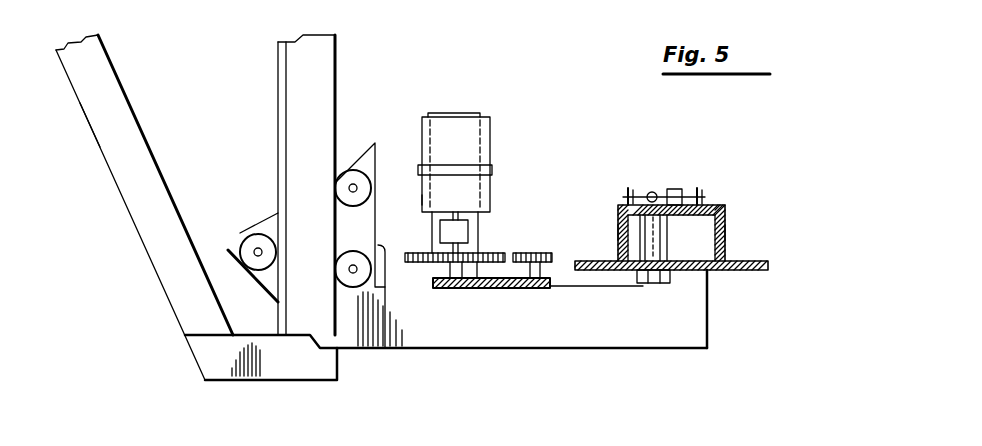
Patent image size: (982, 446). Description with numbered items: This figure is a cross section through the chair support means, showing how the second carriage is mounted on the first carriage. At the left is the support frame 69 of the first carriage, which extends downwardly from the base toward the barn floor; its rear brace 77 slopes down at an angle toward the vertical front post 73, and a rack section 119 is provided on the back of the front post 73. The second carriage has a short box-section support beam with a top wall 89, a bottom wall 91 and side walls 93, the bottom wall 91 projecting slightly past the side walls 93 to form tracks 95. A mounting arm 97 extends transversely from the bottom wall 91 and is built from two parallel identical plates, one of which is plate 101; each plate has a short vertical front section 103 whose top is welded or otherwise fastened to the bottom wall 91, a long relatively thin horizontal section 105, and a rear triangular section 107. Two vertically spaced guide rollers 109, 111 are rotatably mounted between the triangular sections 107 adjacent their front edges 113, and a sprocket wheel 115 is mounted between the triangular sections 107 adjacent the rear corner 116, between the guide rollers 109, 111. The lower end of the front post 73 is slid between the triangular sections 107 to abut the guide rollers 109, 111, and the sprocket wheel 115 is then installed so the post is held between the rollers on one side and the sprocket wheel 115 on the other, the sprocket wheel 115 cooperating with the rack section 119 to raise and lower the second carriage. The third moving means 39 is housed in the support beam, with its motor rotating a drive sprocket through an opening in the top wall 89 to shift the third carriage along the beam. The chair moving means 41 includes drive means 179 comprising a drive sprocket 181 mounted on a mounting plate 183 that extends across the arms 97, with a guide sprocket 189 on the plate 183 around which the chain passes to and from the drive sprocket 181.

The third moving means 39 is at (655, 169).
The chair moving means 41 is at (489, 79).
The support frame 69 is at (120, 194).
The front post 73 is at (337, 67).
The rear brace 77 is at (104, 157).
The top wall 89 is at (708, 207).
The bottom wall 91 is at (702, 257).
The side walls 93 is at (618, 228).
The tracks 95 is at (592, 260).
The mounting arm 97 is at (617, 349).
The plate 101 is at (667, 332).
The front section 103 is at (708, 292).
The horizontal section 105 is at (512, 352).
The triangular section 107 is at (263, 285).
The guide roller 109 is at (348, 163).
The guide roller 111 is at (345, 285).
The front edge 113 is at (385, 283).
The sprocket wheel 115 is at (243, 232).
The rear corner 116 is at (230, 253).
The rack section 119 is at (278, 68).
The drive means 179 is at (503, 132).
The drive sprocket 181 is at (410, 285).
The mounting plate 183 is at (548, 280).
The guide sprocket 189 is at (527, 247).